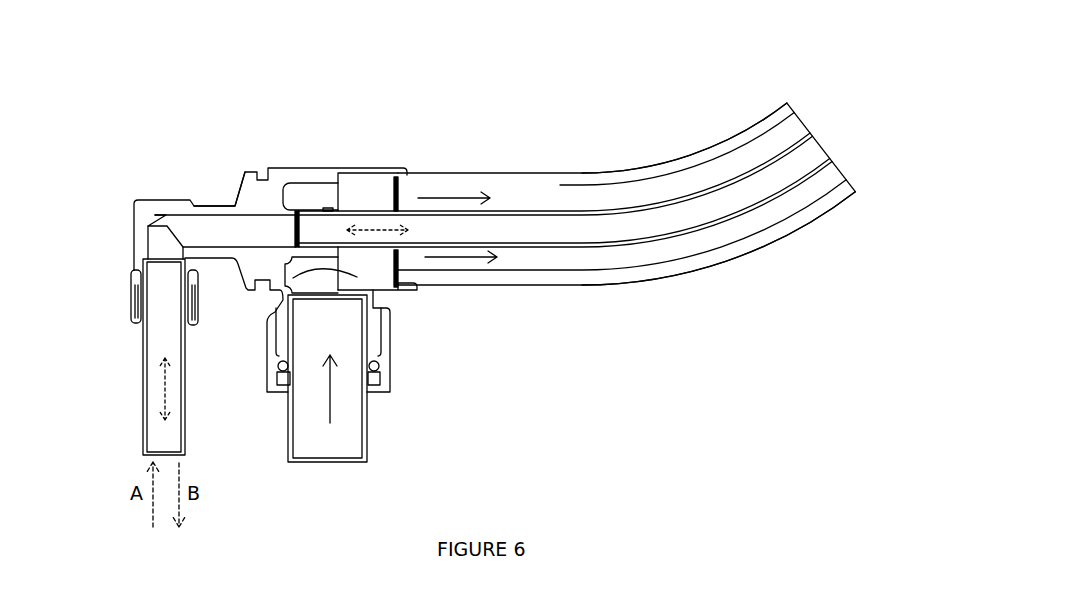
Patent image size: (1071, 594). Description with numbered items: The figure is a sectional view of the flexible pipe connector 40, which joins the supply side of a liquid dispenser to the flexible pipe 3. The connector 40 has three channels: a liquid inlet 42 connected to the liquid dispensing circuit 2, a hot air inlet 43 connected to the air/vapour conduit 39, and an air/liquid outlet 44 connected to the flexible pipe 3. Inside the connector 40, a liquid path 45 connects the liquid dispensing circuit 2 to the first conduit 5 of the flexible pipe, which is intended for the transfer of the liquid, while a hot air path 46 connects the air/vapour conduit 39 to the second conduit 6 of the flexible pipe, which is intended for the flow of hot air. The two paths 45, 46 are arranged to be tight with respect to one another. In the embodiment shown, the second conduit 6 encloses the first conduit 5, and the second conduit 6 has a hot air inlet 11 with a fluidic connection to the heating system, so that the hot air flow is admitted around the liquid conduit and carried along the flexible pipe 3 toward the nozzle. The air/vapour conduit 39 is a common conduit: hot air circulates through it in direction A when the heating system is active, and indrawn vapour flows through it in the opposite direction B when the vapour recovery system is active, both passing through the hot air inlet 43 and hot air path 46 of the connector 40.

The liquid dispensing circuit 2 is at (365, 430).
The flexible pipe 3 is at (660, 163).
The first conduit 5 is at (521, 173).
The second conduit 6 is at (545, 248).
The hot air inlet 11 is at (387, 188).
The air/vapour conduit 39 is at (185, 445).
The flexible pipe connector 40 is at (240, 187).
The liquid inlet 42 is at (377, 350).
The hot air inlet 43 is at (134, 275).
The air/liquid outlet 44 is at (398, 173).
The liquid path 45 is at (357, 277).
The hot air path 46 is at (265, 226).